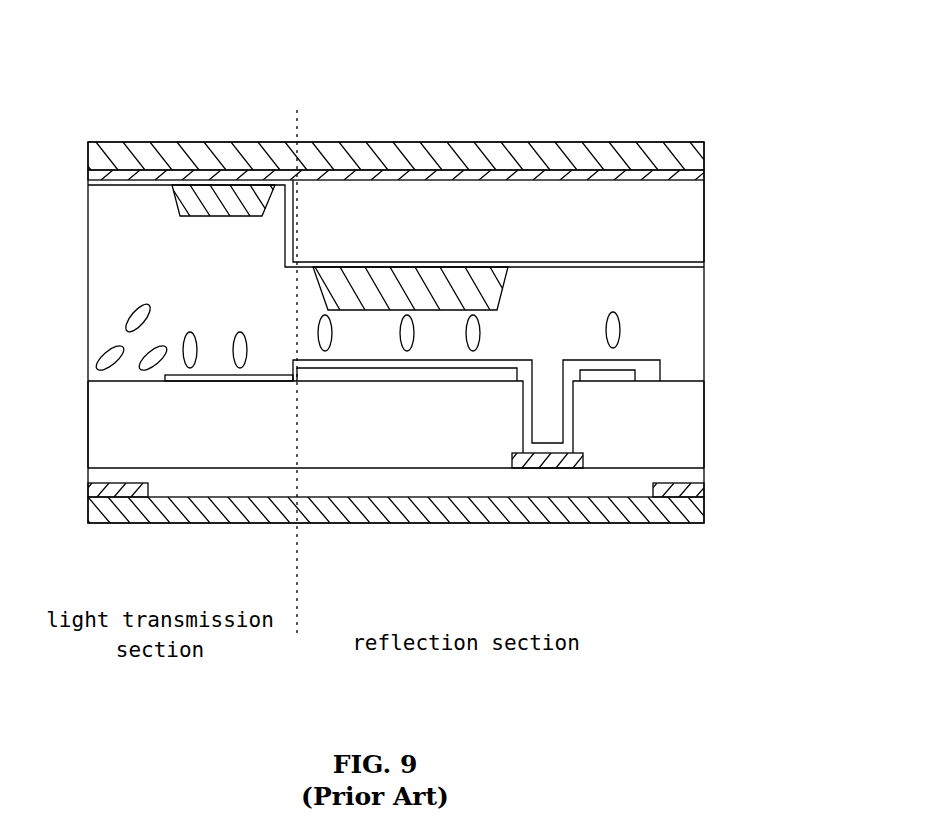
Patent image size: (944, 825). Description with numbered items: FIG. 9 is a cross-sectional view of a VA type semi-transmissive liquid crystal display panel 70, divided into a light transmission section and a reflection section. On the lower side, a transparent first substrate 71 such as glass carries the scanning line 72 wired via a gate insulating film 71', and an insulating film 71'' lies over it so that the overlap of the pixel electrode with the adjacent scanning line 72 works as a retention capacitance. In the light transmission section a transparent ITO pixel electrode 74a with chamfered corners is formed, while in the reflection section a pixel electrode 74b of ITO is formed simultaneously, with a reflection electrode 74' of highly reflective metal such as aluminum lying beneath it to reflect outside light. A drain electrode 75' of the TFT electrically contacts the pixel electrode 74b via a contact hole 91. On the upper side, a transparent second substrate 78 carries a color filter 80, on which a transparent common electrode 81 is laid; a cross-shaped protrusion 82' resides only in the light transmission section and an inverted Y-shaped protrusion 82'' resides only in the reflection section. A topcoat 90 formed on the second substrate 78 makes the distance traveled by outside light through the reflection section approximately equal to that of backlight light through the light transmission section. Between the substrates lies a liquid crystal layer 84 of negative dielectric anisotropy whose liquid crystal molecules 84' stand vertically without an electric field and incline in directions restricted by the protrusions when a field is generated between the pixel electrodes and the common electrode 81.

The transflective liquid crystal display device 70 is at (95, 20).
The first substrate 71 is at (399, 552).
The gate insulating film 71' is at (431, 463).
The insulating film 71'' is at (434, 424).
The scanning line 72 is at (687, 490).
The pixel electrode 74a is at (223, 378).
The pixel electrode 74b is at (360, 368).
The reflection electrode 74' is at (467, 402).
The drain electrode 75' is at (547, 520).
The second substrate 78 is at (507, 141).
The color filter 80 is at (442, 175).
The common electrode 81 is at (697, 266).
The protrusion 82' is at (220, 144).
The protrusion 82'' is at (415, 256).
The liquid crystal layer 84 is at (401, 318).
The liquid crystal molecules 84' is at (100, 348).
The topcoat 90 is at (690, 222).
The contact hole 91 is at (546, 368).